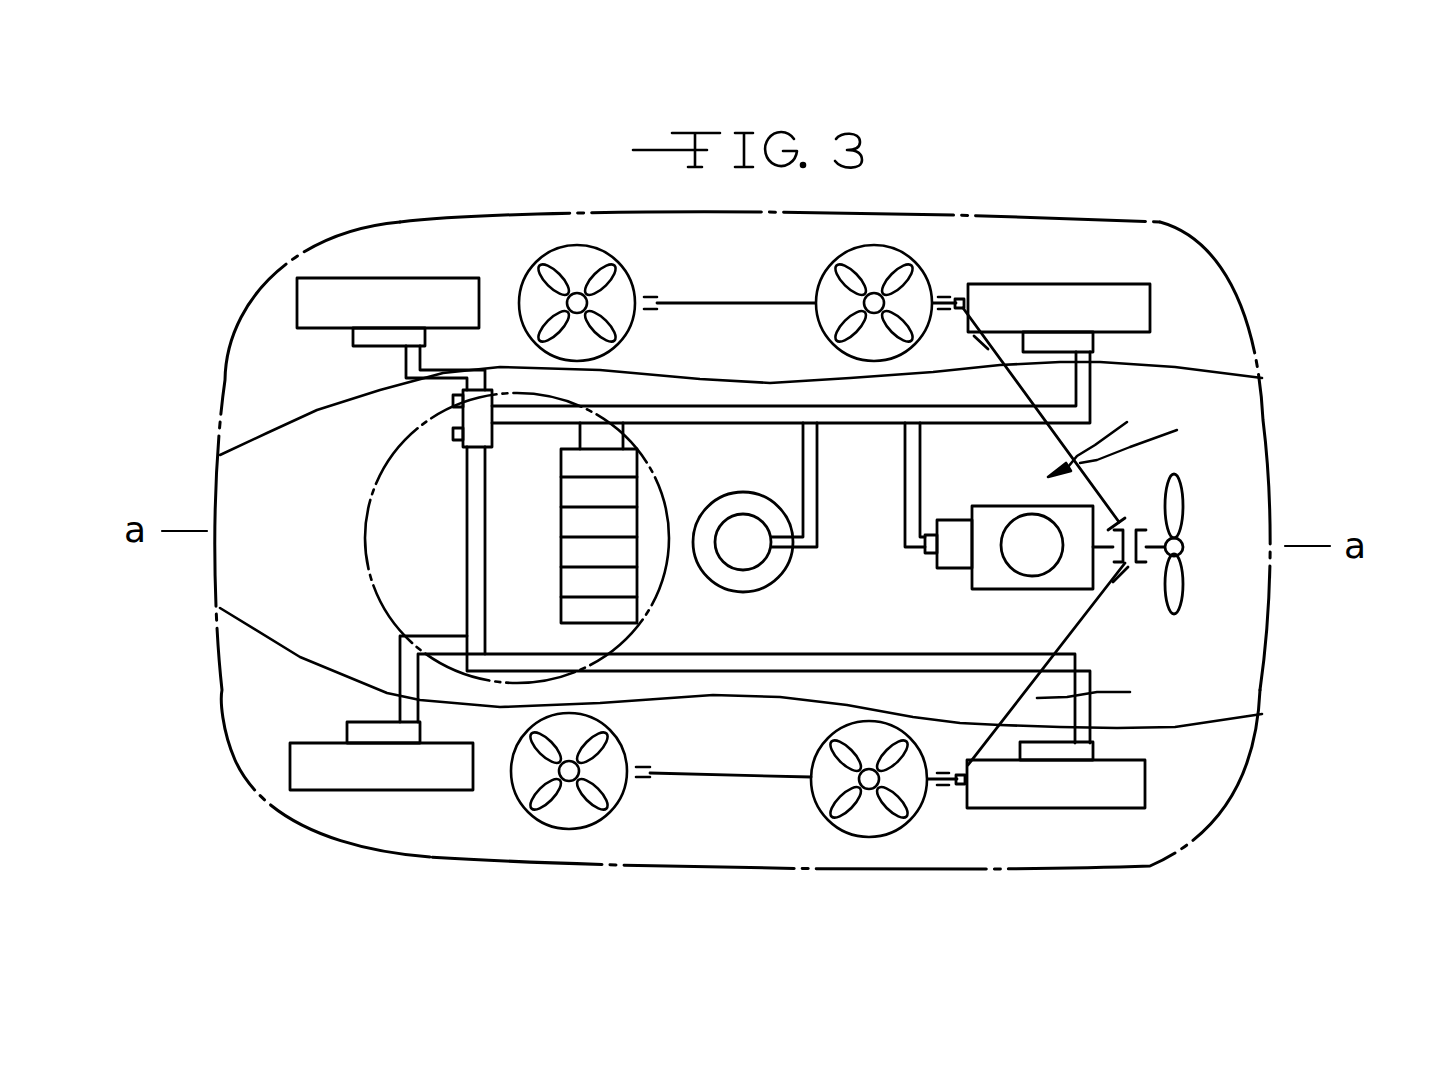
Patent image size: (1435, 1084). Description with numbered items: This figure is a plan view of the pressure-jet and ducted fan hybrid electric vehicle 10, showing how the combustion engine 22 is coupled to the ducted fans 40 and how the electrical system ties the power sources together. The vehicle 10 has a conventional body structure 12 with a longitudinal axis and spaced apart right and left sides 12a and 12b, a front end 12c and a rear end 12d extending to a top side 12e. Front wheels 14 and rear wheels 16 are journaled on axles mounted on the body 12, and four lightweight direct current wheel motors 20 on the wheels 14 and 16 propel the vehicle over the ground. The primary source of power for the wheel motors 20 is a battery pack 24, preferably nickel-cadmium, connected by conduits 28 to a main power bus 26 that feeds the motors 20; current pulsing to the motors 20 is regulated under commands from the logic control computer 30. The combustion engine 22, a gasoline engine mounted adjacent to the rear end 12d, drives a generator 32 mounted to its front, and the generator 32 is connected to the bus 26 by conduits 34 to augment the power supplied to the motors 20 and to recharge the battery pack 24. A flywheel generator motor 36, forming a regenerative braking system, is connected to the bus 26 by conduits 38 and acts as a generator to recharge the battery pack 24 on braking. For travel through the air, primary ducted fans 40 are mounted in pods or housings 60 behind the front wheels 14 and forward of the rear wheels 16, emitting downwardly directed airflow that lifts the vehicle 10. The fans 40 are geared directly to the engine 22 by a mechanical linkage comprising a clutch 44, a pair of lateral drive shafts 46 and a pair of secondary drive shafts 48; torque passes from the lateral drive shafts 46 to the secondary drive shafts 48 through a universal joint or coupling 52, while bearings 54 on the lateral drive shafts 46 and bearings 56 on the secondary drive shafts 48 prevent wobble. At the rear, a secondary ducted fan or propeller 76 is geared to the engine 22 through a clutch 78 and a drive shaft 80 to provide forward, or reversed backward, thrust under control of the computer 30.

The hybrid electric vehicle 10 is at (1252, 168).
The body structure 12 is at (752, 535).
The right side 12a is at (780, 182).
The left side 12b is at (845, 823).
The front end 12c is at (272, 539).
The rear end 12d is at (1274, 456).
The top side 12e is at (1162, 432).
The front wheels 14 is at (377, 522).
The rear wheels 16 is at (1097, 543).
The electric wheel motors 20 is at (736, 544).
The combustion engine 22 is at (1042, 573).
The battery pack 24 is at (567, 536).
The main power bus 26 is at (700, 544).
The conduits 28 is at (563, 460).
The logic control computer 30 is at (443, 463).
The generator 32 is at (941, 569).
The conduits 34 is at (883, 485).
The flywheel generator motor 36 is at (743, 511).
The conduits 38 is at (827, 494).
The primary ducted fans 40 is at (768, 564).
The clutch 44 is at (1088, 569).
The lateral drive shafts 46 is at (1107, 546).
The secondary drive shafts 48 is at (803, 510).
The universal joint or coupling 52 is at (1097, 568).
The bearings 54 is at (1085, 495).
The bearings 56 is at (839, 567).
The pods or housings 60 is at (694, 520).
The secondary ducted fan or propeller 76 is at (1238, 544).
The clutch 78 is at (1188, 515).
The drive shaft 80 is at (1206, 584).